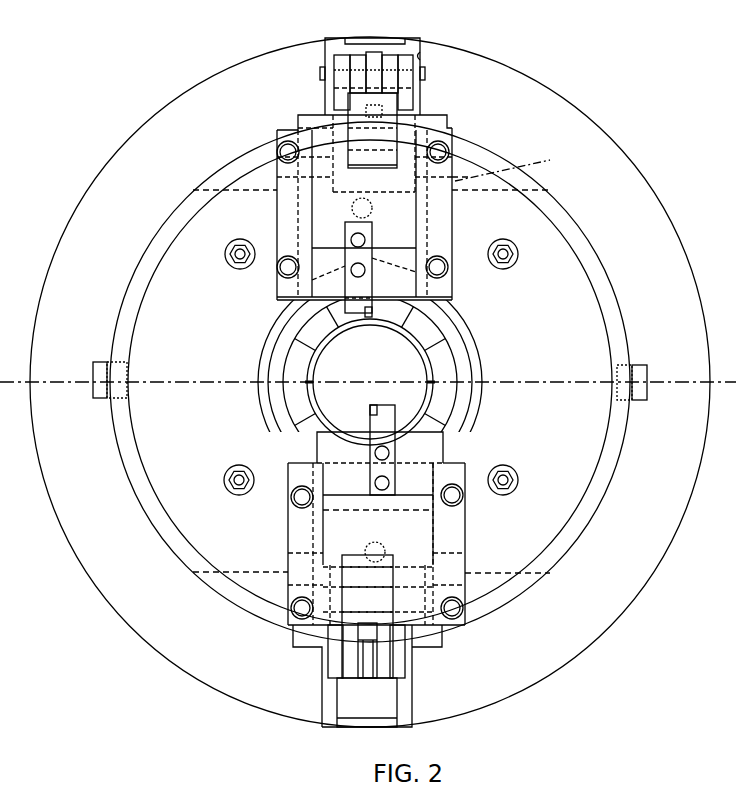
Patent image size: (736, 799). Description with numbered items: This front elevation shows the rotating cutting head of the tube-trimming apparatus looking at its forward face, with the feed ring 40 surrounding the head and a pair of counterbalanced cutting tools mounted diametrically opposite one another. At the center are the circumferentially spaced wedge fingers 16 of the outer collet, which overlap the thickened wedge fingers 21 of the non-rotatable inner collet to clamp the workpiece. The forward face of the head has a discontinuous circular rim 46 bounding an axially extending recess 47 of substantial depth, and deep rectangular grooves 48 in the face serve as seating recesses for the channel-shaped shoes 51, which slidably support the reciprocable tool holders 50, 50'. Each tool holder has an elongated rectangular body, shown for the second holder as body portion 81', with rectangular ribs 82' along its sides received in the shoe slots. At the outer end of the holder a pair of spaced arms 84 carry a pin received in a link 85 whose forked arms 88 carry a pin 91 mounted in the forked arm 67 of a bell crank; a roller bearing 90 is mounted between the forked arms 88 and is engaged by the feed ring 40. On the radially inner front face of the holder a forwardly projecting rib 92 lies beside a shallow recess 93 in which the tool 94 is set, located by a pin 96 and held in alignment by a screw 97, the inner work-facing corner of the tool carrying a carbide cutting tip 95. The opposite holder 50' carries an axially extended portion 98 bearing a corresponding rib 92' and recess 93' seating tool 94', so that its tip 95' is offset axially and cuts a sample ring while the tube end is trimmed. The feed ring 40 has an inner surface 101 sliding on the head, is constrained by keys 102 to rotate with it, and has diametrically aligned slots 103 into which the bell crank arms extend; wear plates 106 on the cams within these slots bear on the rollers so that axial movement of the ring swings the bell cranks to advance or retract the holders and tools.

The wedge fingers 16 is at (305, 360).
The thickened wedge fingers 21 is at (395, 322).
The feed ring 40 is at (668, 568).
The circular rim 46 is at (607, 305).
The recess 47 is at (571, 264).
The grooves 48 is at (455, 210).
The tool holder 50 is at (387, 214).
The tool holder 50' is at (477, 552).
The shoes 51 is at (440, 283).
The forked arm 67 is at (343, 63).
The body portion 81' is at (348, 544).
The ribs 82' is at (329, 463).
The spaced arms 84 is at (323, 135).
The link 85 is at (378, 143).
The forked arms 88 is at (357, 60).
The roller bearing 90 is at (375, 58).
The pin 91 is at (330, 78).
The rib 92 is at (364, 225).
The rib 92' is at (378, 500).
The recess 93 is at (383, 262).
The recess 93' is at (401, 468).
The tool 94 is at (375, 269).
The tool 94' is at (390, 437).
The carbide cutting tip 95 is at (480, 307).
The carbide cutting tip 95' is at (359, 401).
The pin 96 is at (364, 240).
The screw 97 is at (356, 270).
The axially extended portion 98 is at (352, 478).
The inner surface 101 is at (462, 124).
The keys 102 is at (100, 392).
The slots 103 is at (422, 56).
The wear plates 106 is at (367, 712).